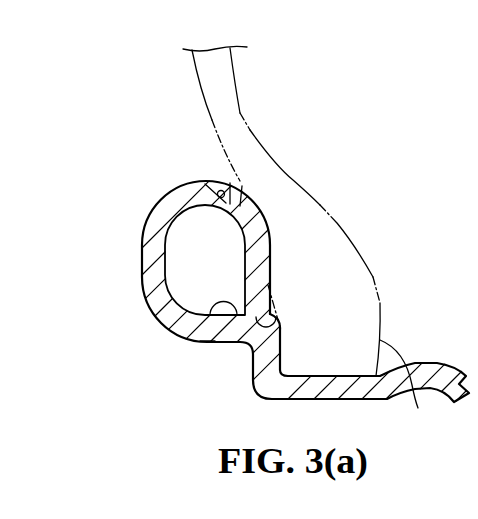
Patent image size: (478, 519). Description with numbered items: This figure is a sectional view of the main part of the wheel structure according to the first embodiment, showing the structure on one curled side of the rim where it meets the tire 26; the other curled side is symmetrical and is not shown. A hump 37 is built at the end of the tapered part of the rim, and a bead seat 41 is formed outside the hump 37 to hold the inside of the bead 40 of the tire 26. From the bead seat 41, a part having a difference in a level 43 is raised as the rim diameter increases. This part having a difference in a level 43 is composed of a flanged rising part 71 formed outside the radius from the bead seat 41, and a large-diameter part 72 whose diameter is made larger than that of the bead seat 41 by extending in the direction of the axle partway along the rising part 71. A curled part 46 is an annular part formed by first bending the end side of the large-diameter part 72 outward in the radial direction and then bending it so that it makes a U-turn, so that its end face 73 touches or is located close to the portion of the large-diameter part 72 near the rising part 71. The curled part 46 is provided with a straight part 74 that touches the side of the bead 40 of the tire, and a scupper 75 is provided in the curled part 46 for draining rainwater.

The tire 26 is at (238, 78).
The hump 37 is at (430, 363).
The bead 40 is at (418, 408).
The bead seat 41 is at (348, 376).
The part having a difference in a level 43 is at (247, 362).
The curled part 46 is at (152, 193).
The rising part 71 is at (283, 343).
The large-diameter part 72 is at (197, 336).
The end face 73 is at (280, 337).
The straight part 74 is at (270, 247).
The scupper 75 is at (207, 177).